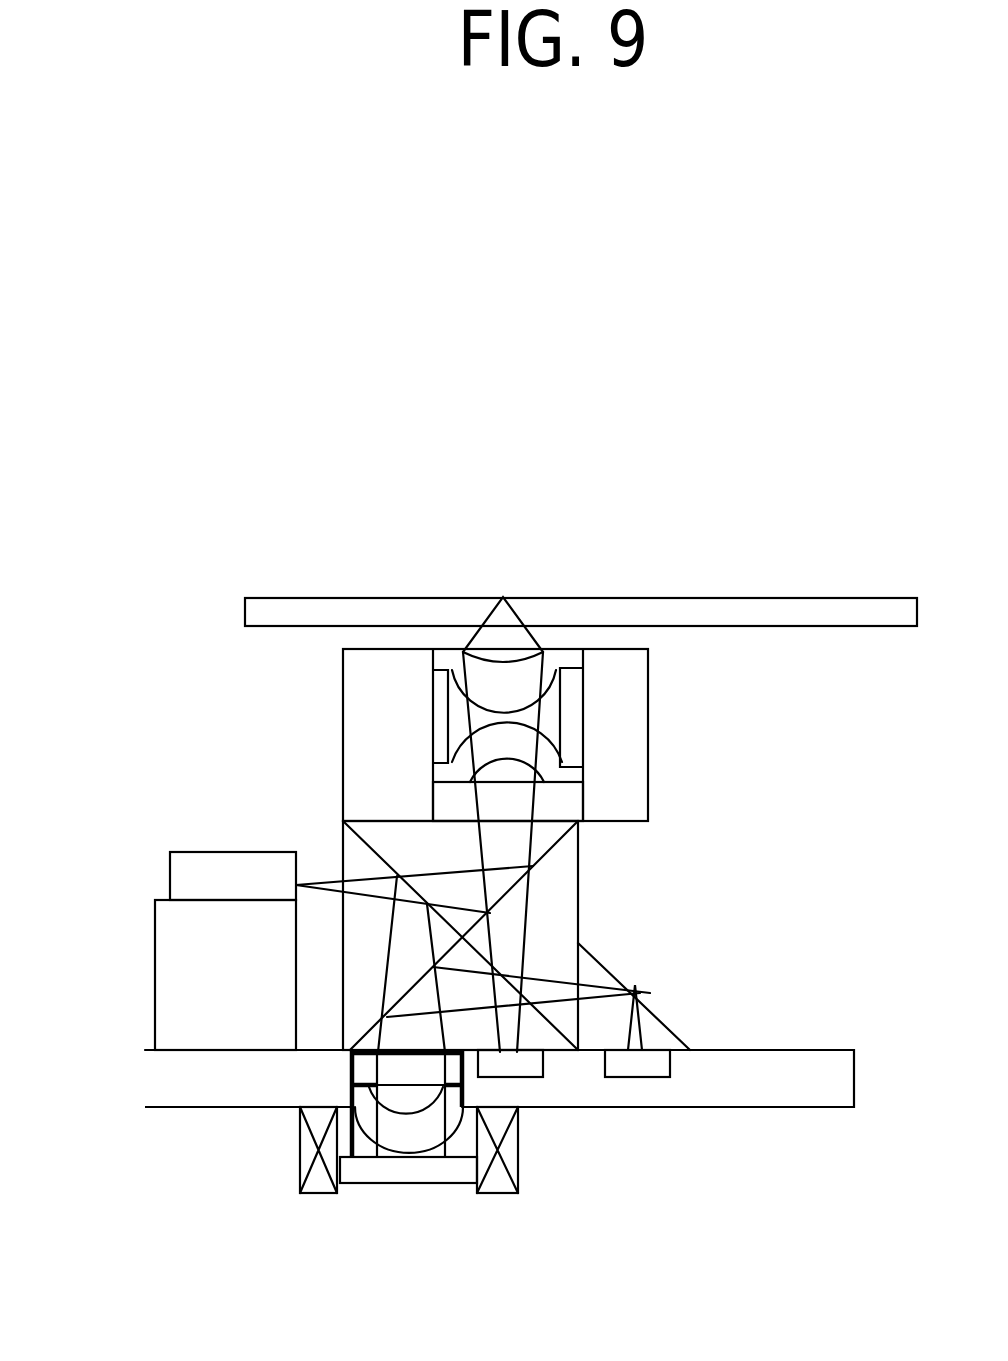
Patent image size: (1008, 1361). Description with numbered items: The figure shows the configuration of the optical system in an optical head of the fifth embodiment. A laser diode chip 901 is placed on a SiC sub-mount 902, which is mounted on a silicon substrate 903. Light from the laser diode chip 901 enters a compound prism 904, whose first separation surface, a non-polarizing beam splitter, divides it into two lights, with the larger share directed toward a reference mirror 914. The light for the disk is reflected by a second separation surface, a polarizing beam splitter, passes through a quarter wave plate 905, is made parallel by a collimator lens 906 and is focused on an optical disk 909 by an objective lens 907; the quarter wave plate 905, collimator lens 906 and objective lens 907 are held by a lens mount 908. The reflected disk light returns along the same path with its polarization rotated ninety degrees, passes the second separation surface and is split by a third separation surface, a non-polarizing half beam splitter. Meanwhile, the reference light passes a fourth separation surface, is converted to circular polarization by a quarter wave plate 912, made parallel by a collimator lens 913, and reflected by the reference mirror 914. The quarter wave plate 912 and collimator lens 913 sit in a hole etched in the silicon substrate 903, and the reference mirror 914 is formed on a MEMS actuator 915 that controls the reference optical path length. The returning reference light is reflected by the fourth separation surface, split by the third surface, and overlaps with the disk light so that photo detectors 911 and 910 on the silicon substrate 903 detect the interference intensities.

The laser diode chip 901 is at (245, 852).
The SiC sub-mount 902 is at (155, 950).
The silicon substrate 903 is at (195, 1108).
The compound prism 904 is at (580, 888).
The quarter wave plate 905 is at (563, 800).
The collimator lens 906 is at (513, 750).
The objective lens 907 is at (525, 686).
The lens mount 908 is at (343, 710).
The optical disk 909 is at (710, 595).
The photo detector 910 is at (517, 1057).
The photo detector 911 is at (638, 1063).
The quarter wave plate 912 is at (417, 1068).
The collimator lens 913 is at (408, 1132).
The reference mirror 914 is at (452, 1177).
The MEMS actuator 915 is at (297, 1132).